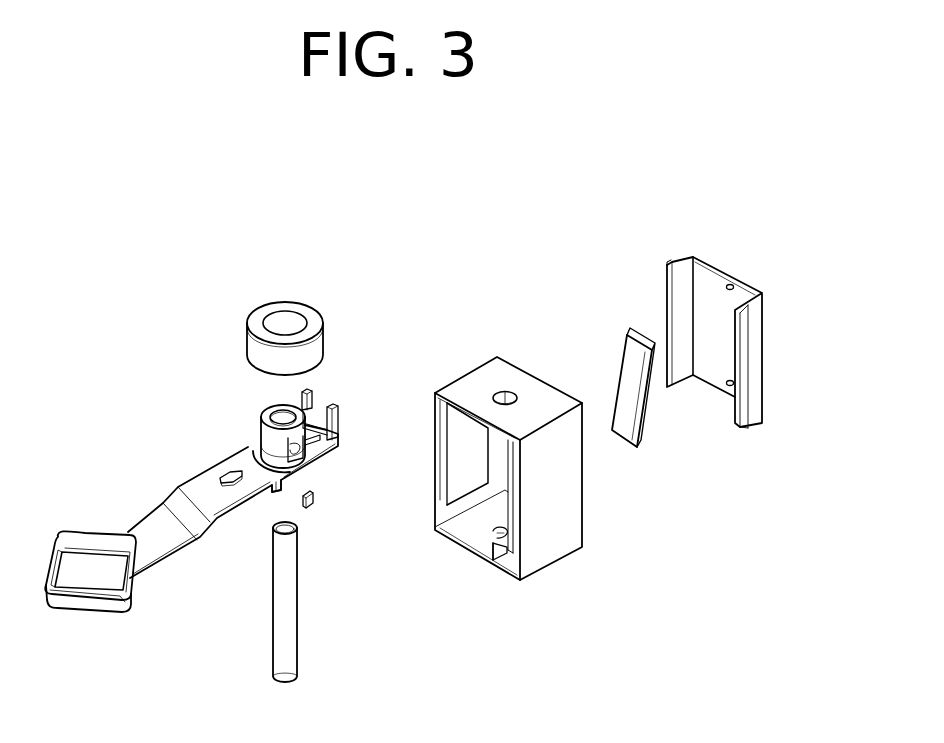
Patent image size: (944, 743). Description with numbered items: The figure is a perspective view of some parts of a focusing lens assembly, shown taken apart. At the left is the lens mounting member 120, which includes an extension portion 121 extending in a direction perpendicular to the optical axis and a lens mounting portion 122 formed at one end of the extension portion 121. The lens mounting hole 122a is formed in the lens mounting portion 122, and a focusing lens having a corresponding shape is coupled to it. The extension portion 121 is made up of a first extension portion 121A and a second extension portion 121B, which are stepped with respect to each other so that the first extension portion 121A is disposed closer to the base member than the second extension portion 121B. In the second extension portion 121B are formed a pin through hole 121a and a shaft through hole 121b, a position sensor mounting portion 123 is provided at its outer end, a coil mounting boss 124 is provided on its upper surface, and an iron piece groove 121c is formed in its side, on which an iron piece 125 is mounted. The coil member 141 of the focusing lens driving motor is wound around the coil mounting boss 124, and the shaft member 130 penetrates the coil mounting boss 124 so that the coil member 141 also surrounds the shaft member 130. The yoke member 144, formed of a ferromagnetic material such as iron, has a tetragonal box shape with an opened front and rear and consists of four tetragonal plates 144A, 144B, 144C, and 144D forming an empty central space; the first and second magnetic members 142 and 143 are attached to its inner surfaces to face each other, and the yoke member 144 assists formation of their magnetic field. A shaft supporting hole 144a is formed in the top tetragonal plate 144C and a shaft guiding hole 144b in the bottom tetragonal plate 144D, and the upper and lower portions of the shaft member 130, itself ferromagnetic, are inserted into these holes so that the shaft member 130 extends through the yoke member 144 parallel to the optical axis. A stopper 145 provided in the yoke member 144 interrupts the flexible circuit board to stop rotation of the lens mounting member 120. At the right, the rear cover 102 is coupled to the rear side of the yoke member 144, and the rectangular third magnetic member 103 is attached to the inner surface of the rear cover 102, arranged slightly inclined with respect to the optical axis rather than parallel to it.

The rear cover 102 is at (762, 347).
The third magnetic member 103 is at (650, 422).
The lens mounting member 120 is at (148, 478).
The extension portion 121 is at (213, 540).
The first extension portion 121A is at (142, 527).
The second extension portion 121B is at (203, 483).
The pin through hole 121a is at (233, 468).
The shaft through hole 121b is at (290, 440).
The iron piece groove 121c is at (273, 481).
The lens mounting portion 122 is at (77, 608).
The lens mounting hole 122a is at (76, 564).
The position sensor mounting portion 123 is at (332, 398).
The coil mounting boss 124 is at (262, 423).
The iron piece 125 is at (313, 503).
The shaft member 130 is at (293, 668).
The coil member 141 is at (305, 299).
The first magnetic member 142 is at (462, 453).
The second magnetic member 143 is at (512, 507).
The yoke member 144 is at (477, 363).
The tetragonal plate 144A is at (560, 495).
The tetragonal plate 144B is at (435, 413).
The top tetragonal plate 144C is at (498, 373).
The bottom tetragonal plate 144D is at (463, 550).
The shaft supporting hole 144a is at (514, 391).
The shaft guiding hole 144b is at (493, 526).
The stopper 145 is at (477, 560).